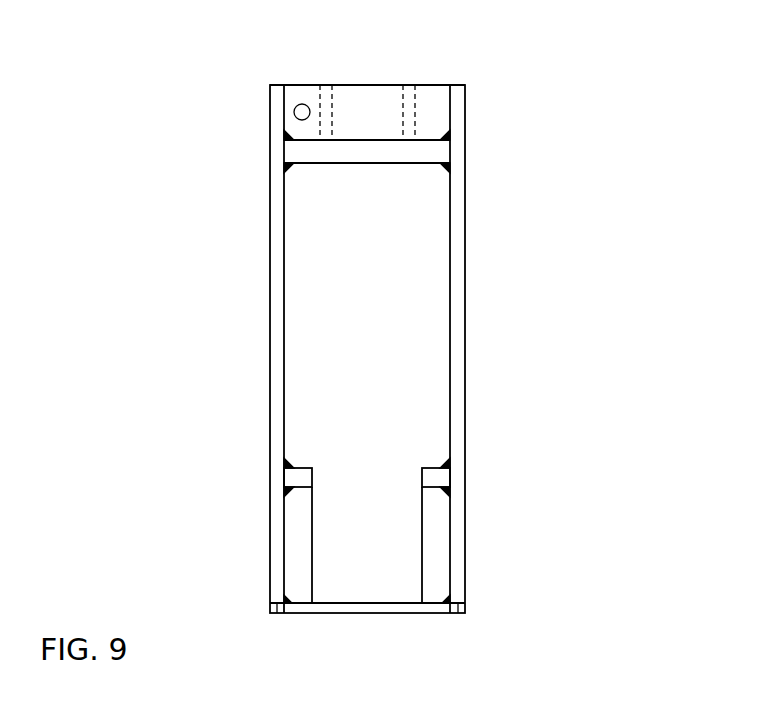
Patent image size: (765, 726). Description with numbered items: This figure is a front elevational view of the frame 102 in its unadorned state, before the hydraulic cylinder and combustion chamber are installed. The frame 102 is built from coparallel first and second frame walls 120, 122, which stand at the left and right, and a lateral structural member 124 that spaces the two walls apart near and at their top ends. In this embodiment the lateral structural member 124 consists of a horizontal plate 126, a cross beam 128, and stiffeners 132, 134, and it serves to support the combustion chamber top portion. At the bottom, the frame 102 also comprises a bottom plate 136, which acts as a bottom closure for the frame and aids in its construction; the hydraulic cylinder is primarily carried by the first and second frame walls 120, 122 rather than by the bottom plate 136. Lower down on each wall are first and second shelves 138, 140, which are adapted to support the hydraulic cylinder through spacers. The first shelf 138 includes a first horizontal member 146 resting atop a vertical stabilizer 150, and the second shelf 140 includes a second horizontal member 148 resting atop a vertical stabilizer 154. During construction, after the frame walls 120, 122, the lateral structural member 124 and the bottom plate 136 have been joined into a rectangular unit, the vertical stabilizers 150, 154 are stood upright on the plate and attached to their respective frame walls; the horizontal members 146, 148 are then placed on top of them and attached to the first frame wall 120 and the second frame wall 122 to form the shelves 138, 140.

The frame 102 is at (600, 140).
The first frame wall 120 is at (283, 303).
The second frame wall 122 is at (460, 290).
The lateral structural member 124 is at (431, 84).
The horizontal plate 126 is at (317, 152).
The cross beam 128 is at (437, 105).
The stiffener 132 is at (327, 83).
The stiffener 134 is at (413, 82).
The bottom plate 136 is at (375, 610).
The first shelf 138 is at (300, 466).
The second shelf 140 is at (433, 463).
The first horizontal member 146 is at (288, 480).
The second horizontal member 148 is at (437, 475).
The vertical stabilizer 150 is at (300, 538).
The vertical stabilizer 154 is at (437, 542).